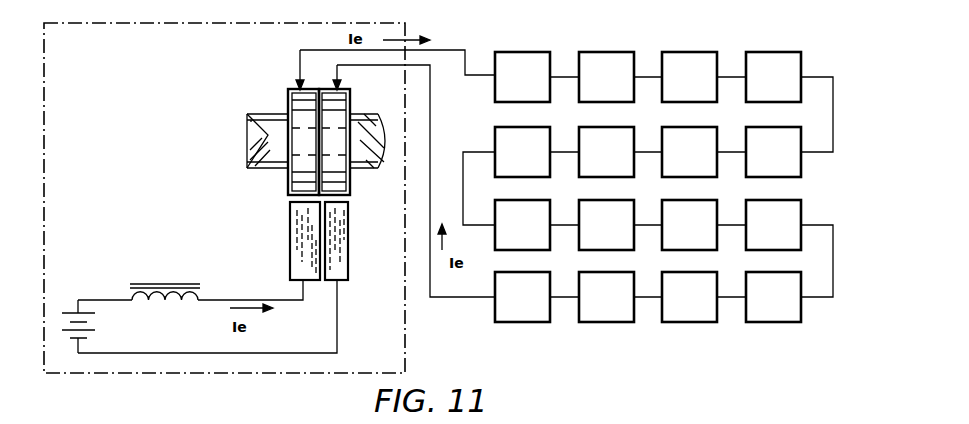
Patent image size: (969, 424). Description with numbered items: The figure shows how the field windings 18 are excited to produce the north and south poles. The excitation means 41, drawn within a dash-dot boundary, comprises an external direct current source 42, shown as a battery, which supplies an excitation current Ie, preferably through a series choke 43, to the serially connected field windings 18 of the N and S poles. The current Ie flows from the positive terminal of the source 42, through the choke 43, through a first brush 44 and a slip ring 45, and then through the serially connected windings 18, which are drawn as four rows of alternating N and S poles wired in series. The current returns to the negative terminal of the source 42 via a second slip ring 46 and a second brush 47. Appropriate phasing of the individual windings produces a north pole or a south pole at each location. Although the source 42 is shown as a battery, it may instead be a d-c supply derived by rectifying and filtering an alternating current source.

The excitation means 41 is at (118, 380).
The external direct current source 42 is at (92, 331).
The series choke 43 is at (199, 299).
The first brush 44 is at (289, 232).
The slip ring 45 is at (292, 90).
The second slip ring 46 is at (345, 92).
The second brush 47 is at (349, 240).
The field windings 18 is at (808, 333).